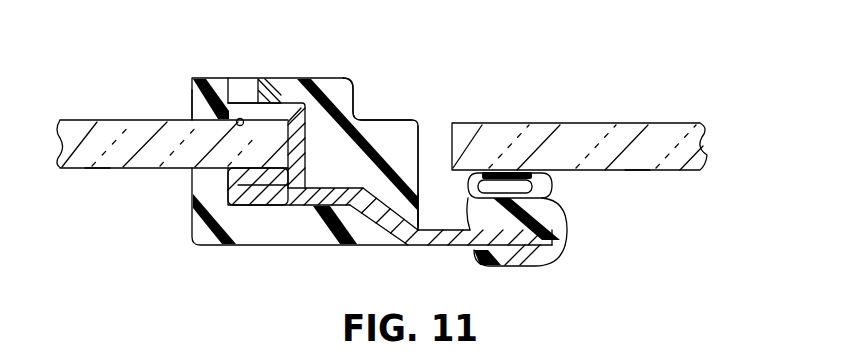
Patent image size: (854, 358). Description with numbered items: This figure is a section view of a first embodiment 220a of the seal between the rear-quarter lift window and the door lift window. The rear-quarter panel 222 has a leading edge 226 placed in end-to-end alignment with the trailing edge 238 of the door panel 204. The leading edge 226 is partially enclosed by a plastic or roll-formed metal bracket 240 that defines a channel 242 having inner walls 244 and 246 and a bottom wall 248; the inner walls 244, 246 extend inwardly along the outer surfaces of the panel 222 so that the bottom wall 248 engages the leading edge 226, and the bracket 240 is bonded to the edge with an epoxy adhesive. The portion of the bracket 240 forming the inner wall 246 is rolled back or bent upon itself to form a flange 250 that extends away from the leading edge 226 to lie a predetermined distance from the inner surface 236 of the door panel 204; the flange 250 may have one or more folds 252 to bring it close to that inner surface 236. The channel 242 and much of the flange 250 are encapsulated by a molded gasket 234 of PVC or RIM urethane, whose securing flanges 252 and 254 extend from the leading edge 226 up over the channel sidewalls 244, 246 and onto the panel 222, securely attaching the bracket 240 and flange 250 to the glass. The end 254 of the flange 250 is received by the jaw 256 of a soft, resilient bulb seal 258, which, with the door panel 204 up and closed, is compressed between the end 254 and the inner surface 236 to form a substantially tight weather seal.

The seal embodiment 220a is at (371, 174).
The rear-quarter panel 222 is at (78, 118).
The door panel 204 is at (692, 122).
The inner surface 236 is at (97, 170).
The securing flange 252 is at (197, 106).
The inner wall 244 is at (233, 101).
The channel 242 is at (257, 94).
The leading edge 226 is at (280, 123).
The molded gasket 234 is at (346, 78).
The trailing edge 238 is at (441, 203).
The inner wall 246 is at (262, 240).
The bottom wall 248 is at (265, 163).
The bracket 240 is at (347, 210).
The flange 250 is at (387, 238).
The end of flange 254 is at (192, 208).
The jaw 256 is at (476, 250).
The bulb seal 258 is at (574, 204).